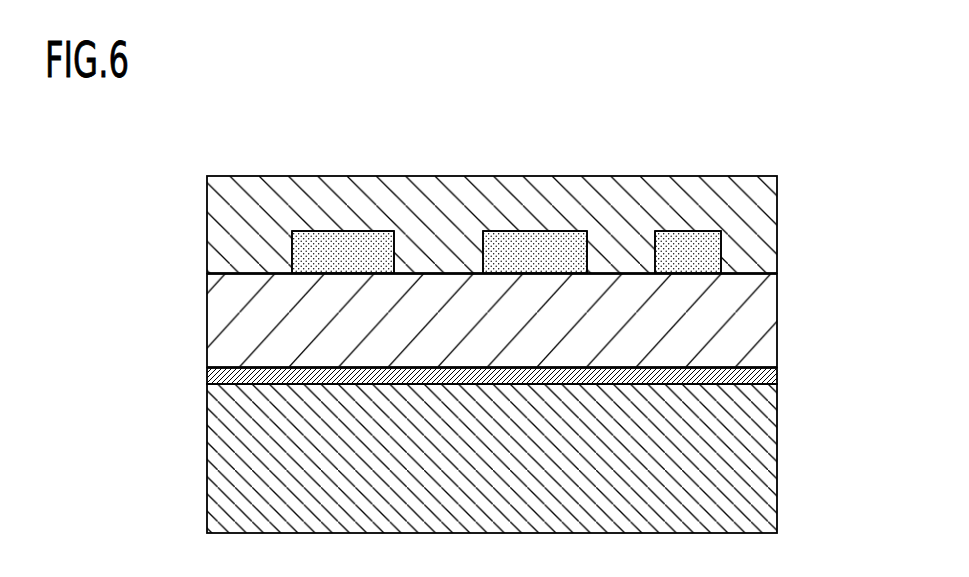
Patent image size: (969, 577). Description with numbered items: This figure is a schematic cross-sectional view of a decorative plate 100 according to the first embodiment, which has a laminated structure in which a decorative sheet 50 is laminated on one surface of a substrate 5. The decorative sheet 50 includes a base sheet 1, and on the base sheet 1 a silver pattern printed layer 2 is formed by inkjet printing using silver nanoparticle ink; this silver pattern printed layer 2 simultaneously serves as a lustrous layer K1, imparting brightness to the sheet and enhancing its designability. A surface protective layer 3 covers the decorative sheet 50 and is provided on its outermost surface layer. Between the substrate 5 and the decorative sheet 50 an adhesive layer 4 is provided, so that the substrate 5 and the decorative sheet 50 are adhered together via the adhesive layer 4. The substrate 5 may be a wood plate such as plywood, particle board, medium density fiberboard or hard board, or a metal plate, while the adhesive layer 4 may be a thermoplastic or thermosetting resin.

The decorative plate 100 is at (252, 136).
The decorative sheet 50 is at (195, 177).
The surface protective layer 3 is at (760, 207).
The silver pattern printed layer 2 is at (690, 255).
The lustrous layer K1 is at (687, 232).
The base sheet 1 is at (760, 323).
The adhesive layer 4 is at (778, 376).
The substrate 5 is at (760, 450).